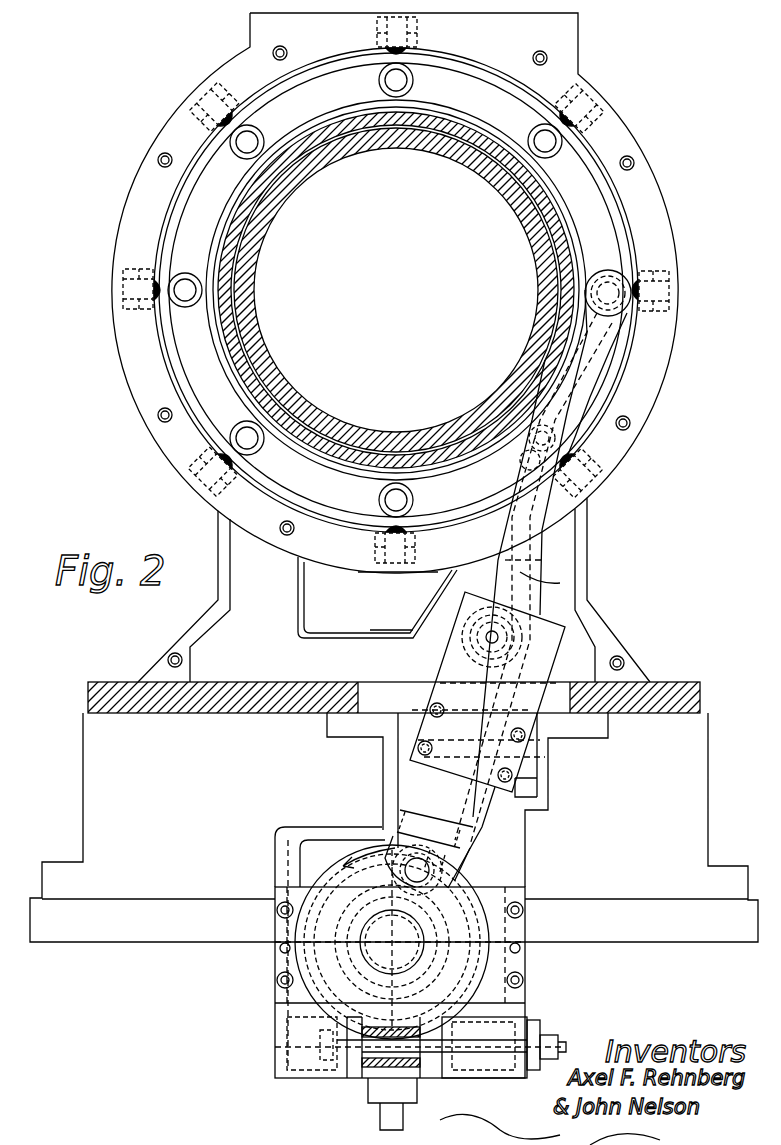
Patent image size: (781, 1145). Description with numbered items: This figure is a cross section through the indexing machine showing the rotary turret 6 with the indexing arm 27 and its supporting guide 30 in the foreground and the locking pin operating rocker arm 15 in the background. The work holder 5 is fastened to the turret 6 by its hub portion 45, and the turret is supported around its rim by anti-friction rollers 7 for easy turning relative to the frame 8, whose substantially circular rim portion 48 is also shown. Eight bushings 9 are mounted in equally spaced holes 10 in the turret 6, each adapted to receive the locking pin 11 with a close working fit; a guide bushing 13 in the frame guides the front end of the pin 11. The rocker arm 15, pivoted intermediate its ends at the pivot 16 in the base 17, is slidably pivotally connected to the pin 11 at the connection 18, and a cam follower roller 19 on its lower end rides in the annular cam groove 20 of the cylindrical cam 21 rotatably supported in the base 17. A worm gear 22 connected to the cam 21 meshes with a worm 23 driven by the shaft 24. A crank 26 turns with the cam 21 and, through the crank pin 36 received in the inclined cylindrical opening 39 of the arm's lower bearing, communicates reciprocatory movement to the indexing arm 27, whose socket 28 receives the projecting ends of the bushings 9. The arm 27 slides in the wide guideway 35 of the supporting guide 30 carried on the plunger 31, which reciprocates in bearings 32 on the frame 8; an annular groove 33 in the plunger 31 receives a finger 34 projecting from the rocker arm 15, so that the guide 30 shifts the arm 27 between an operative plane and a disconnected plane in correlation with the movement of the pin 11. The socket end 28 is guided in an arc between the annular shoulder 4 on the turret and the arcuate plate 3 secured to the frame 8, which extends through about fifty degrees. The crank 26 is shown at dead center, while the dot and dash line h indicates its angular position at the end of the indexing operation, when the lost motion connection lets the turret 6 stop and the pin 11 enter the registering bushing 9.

The arcuate plate 3 is at (615, 365).
The annular shoulder 4 is at (576, 226).
The work holder 5 is at (238, 366).
The rotary turret 6 is at (508, 140).
The anti-friction rollers 7 is at (412, 58).
The frame 8 is at (650, 196).
The bushings 9 is at (553, 155).
The holes 10 is at (535, 128).
The locking pin 11 is at (522, 462).
The guide bushing 13 is at (505, 402).
The rocker arm 15 is at (545, 560).
The pivot 16 is at (410, 775).
The base 17 is at (540, 797).
The slidable pivotal connection 18 is at (556, 440).
The cam follower roller 19 is at (470, 978).
The cam groove 20 is at (524, 928).
The cylindrical cam 21 is at (452, 880).
The worm gear 22 is at (290, 1006).
The worm 23 is at (368, 1075).
The shaft 24 is at (556, 1035).
The crank 26 is at (385, 855).
The table indexing arm 27 is at (560, 583).
The socket 28 is at (604, 272).
The supporting guide 30 is at (470, 676).
The plunger 31 is at (485, 612).
The bearings 32 is at (468, 628).
The annular groove 33 is at (480, 650).
The finger 34 is at (486, 720).
The guideway 35 is at (400, 762).
The crank pin 36 is at (430, 830).
The cylindrical opening 39 is at (438, 858).
The hub portion 45 is at (270, 370).
The rim portion 48 is at (650, 410).
The dot and dash line g— h is at (345, 1066).